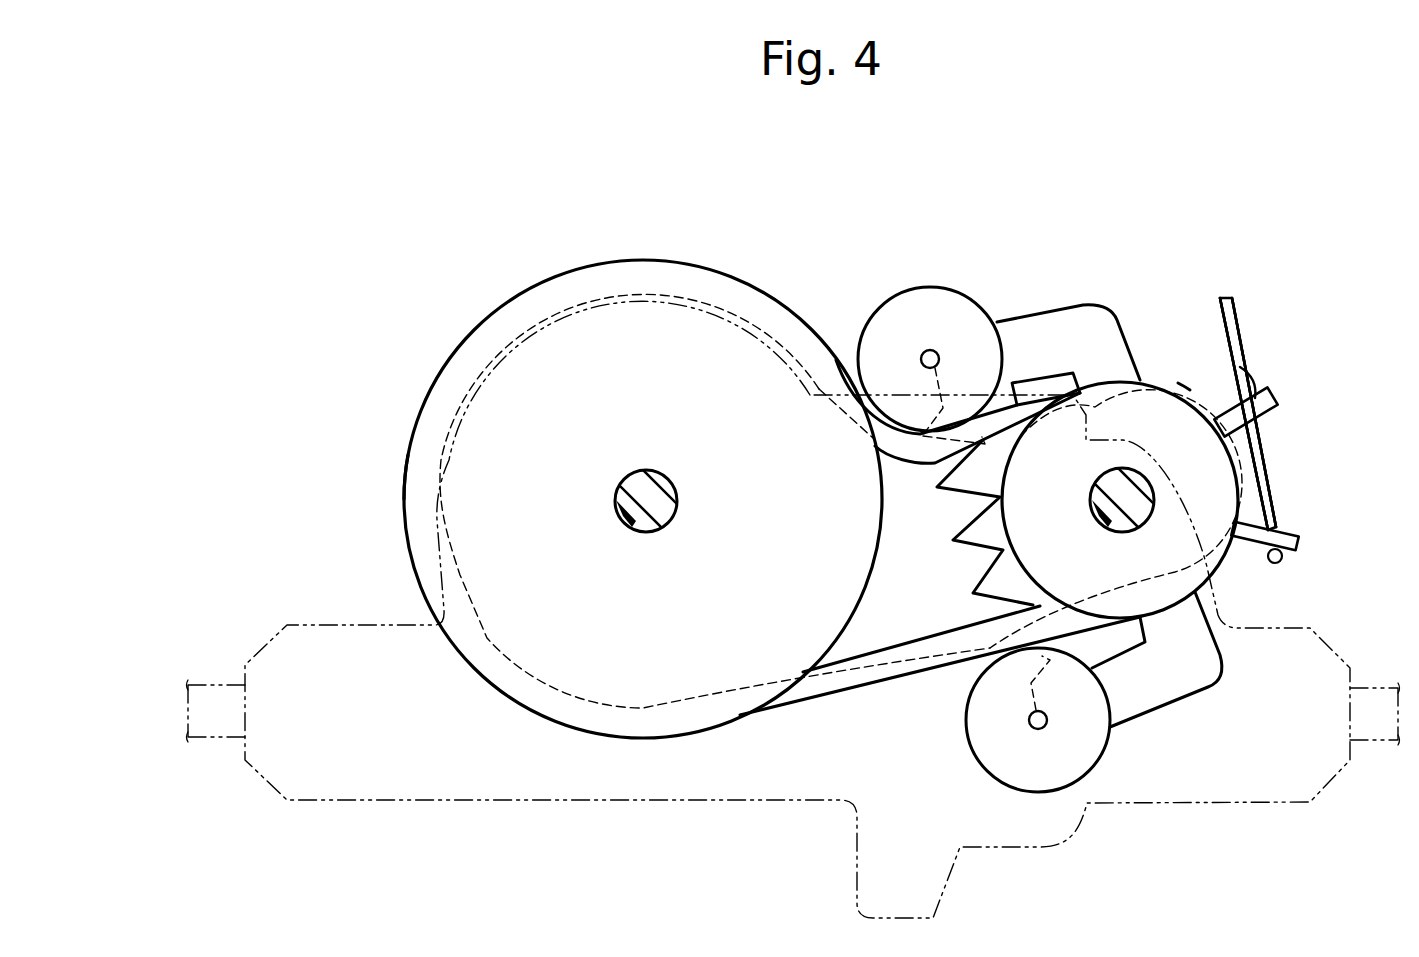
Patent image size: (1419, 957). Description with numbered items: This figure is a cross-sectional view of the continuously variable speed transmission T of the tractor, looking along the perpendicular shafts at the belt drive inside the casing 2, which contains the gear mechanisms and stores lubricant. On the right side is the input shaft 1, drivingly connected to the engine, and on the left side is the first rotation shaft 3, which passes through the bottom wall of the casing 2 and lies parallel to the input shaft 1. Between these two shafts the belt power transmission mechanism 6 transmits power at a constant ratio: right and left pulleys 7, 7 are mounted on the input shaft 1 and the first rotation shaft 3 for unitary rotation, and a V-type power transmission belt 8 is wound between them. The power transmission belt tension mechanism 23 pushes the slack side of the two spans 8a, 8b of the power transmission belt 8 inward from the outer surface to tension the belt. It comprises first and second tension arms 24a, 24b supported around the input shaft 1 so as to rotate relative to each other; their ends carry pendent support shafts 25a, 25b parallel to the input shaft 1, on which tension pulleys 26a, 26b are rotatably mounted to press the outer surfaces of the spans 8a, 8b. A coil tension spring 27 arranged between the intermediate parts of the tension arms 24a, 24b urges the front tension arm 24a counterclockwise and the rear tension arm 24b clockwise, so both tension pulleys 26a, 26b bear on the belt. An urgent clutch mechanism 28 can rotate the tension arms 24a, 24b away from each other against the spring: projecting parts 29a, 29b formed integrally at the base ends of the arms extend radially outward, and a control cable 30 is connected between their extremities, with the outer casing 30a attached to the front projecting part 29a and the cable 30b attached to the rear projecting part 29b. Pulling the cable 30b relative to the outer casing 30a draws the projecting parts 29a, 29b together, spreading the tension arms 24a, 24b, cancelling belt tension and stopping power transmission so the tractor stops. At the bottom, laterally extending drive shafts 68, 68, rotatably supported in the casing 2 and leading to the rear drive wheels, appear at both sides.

The input shaft 1 is at (1090, 500).
The casing 2 is at (307, 625).
The first rotation shaft 3 is at (613, 492).
The belt power transmission mechanism 6 is at (445, 280).
The pulley 7 is at (408, 455).
The power transmission belt 8 is at (787, 708).
The span 8a is at (1012, 385).
The span 8b is at (853, 690).
The power transmission belt tension mechanism 23 is at (1078, 304).
The first tension arm 24a is at (1120, 317).
The second tension arm 24b is at (1187, 697).
The support shaft 25a is at (933, 350).
The support shaft 25b is at (1047, 723).
The tension pulley 26a is at (873, 317).
The tension pulley 26b is at (1026, 793).
The coil tension spring 27 is at (973, 545).
The urgent clutch mechanism 28 is at (1277, 338).
The projecting part 29a is at (1272, 403).
The projecting part 29b is at (1300, 545).
The control cable 30 is at (1340, 428).
The outer casing 30a is at (1268, 415).
The cable 30b is at (1267, 457).
The drive shaft 68 is at (207, 738).
The continuously variable speed transmission T is at (280, 108).